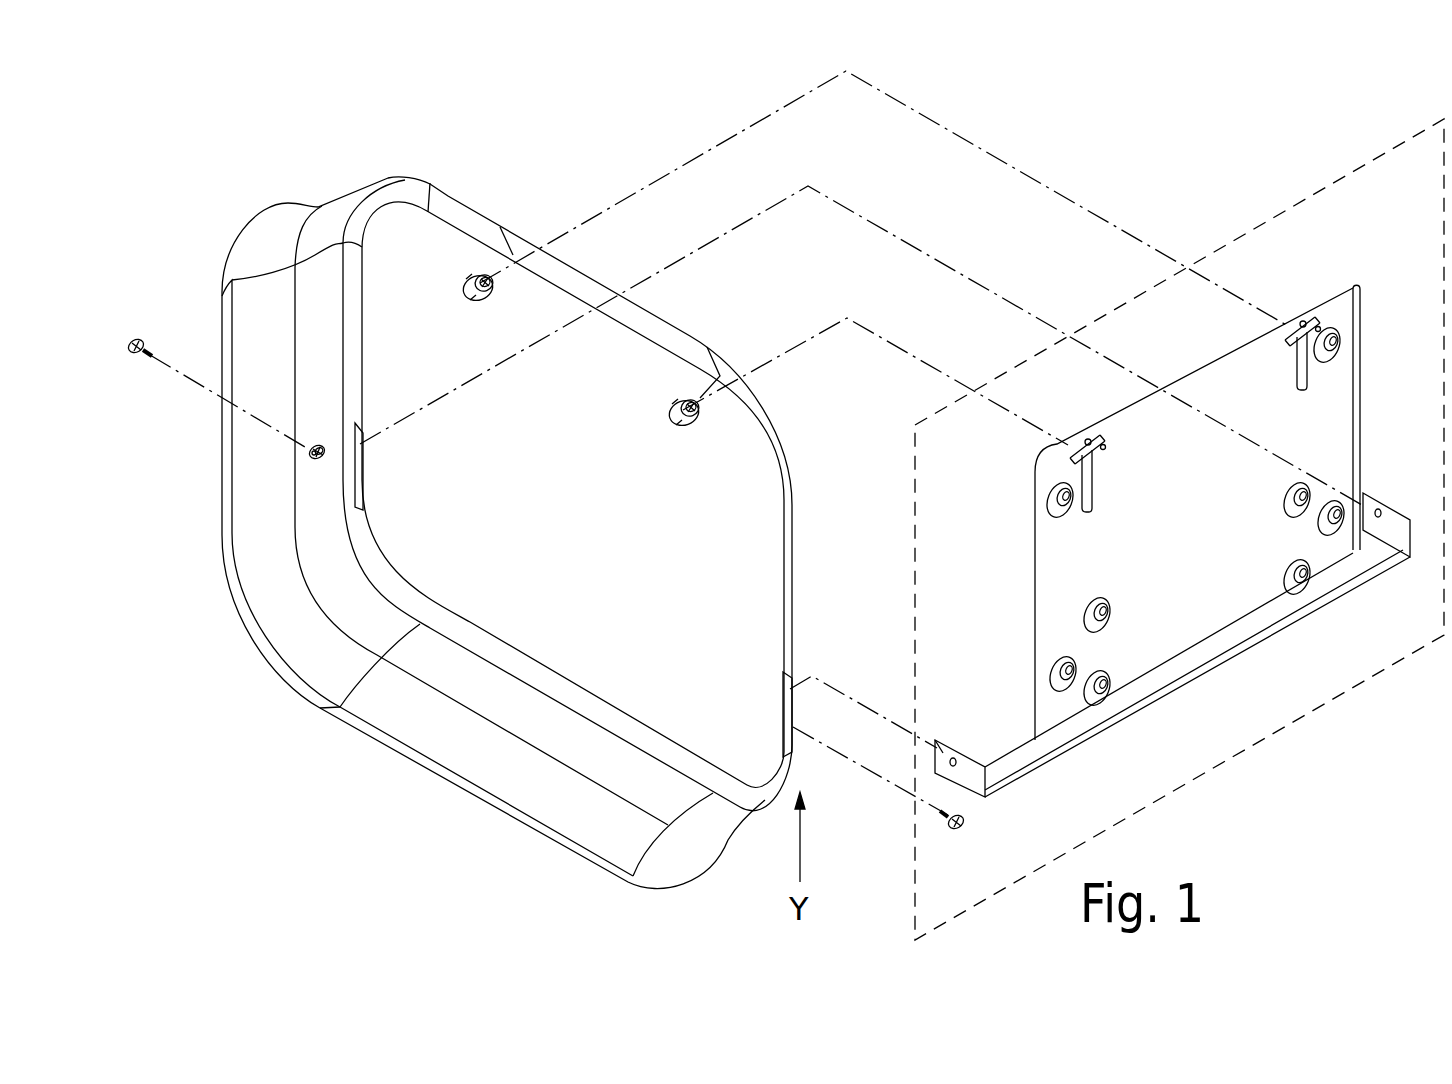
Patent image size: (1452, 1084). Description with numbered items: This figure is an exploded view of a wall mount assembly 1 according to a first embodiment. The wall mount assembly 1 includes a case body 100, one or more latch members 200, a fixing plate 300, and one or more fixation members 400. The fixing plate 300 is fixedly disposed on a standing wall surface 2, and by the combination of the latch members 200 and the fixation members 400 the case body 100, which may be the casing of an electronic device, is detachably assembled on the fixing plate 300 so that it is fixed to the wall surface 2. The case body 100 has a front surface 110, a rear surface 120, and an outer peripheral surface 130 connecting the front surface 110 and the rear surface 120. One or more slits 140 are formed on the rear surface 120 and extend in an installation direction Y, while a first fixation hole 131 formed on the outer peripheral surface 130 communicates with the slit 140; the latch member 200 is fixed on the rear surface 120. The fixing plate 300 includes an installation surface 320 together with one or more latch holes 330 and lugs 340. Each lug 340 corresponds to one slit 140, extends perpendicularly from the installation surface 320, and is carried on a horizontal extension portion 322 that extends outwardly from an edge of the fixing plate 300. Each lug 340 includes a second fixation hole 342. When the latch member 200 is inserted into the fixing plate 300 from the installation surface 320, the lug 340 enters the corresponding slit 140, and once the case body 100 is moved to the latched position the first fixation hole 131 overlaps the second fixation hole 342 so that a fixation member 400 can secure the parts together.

The wall mount assembly 1 is at (1107, 155).
The wall surface 2 is at (1360, 170).
The case body 100 is at (236, 205).
The front surface 110 is at (352, 729).
The rear surface 120 is at (764, 545).
The outer peripheral surface 130 is at (306, 467).
The first fixation hole 131 is at (310, 451).
The slit 140 is at (355, 478).
The latch member 200 is at (465, 272).
The fixing plate 300 is at (1060, 577).
The installation surface 320 is at (1208, 598).
The horizontal extension portion 322 is at (1022, 752).
The latch hole 330 is at (1103, 455).
The lug 340 is at (973, 767).
The second fixation hole 342 is at (953, 757).
The fixation member 400 is at (137, 340).